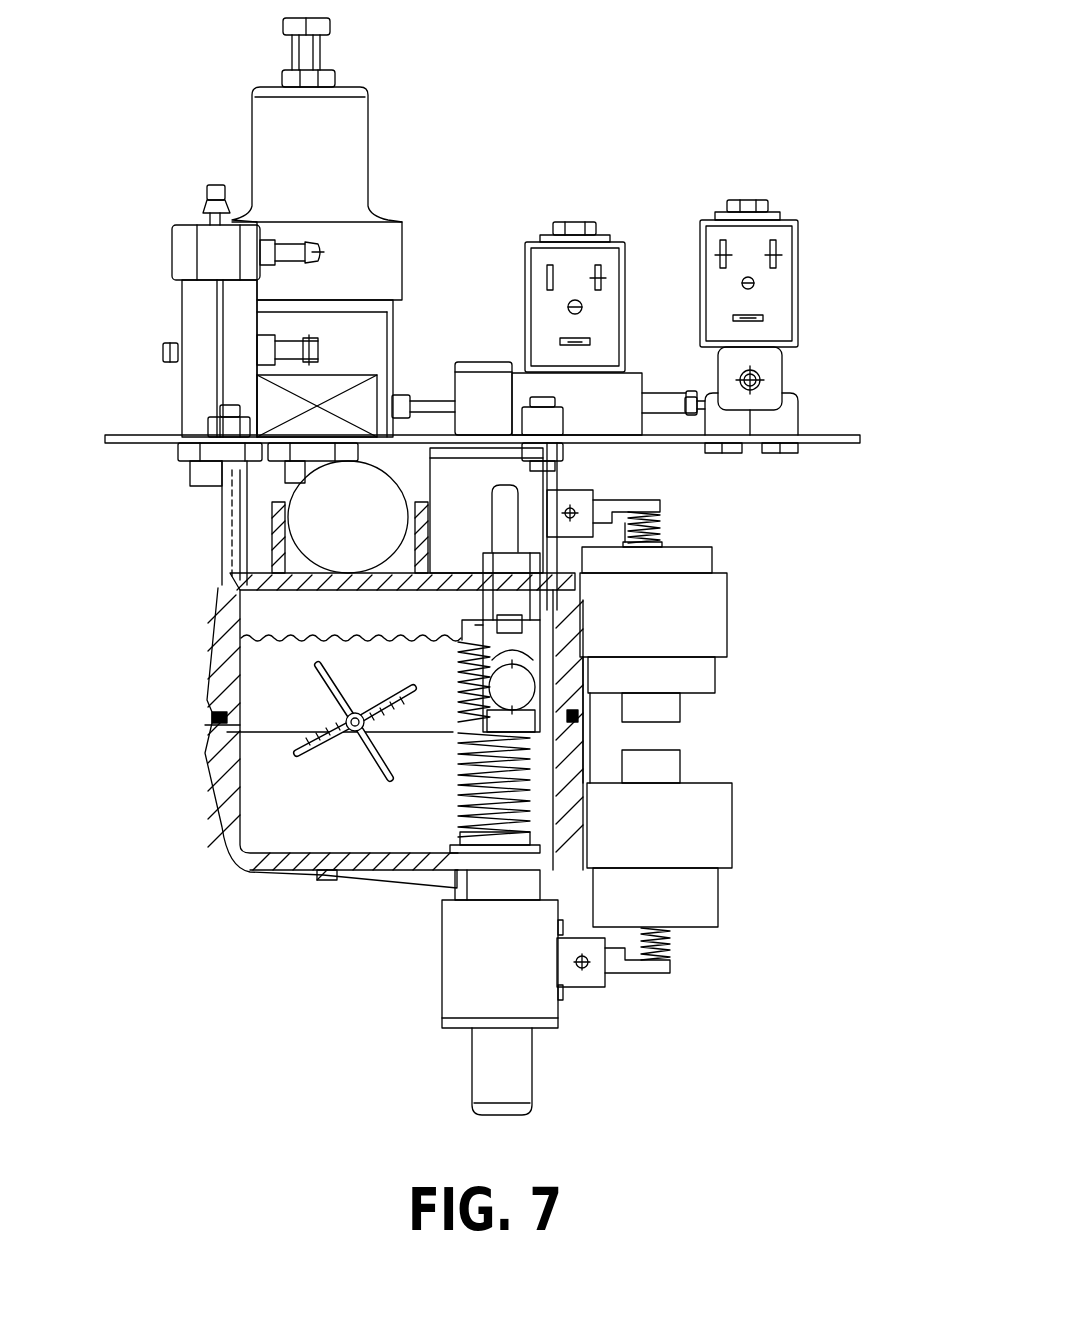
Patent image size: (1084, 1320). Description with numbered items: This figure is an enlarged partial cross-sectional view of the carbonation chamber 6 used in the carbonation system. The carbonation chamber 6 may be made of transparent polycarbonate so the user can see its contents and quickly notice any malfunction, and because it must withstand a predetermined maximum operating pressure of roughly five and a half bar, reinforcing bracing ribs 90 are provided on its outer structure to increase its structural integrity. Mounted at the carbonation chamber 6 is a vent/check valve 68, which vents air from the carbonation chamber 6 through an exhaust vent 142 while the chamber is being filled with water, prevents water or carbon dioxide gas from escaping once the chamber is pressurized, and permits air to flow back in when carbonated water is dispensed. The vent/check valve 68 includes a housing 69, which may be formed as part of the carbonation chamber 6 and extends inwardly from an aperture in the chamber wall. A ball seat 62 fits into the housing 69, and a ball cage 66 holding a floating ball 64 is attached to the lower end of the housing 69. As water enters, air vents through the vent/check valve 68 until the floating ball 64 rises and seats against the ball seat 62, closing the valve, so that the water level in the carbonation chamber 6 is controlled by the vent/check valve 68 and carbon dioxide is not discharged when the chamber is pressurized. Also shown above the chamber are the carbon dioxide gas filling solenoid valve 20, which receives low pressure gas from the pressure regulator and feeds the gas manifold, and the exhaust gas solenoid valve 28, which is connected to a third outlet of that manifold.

The carbonation chamber 6 is at (173, 612).
The carbon dioxide gas filling solenoid valve 20 is at (610, 267).
The exhaust gas solenoid valve 28 is at (777, 235).
The ball seat 62 is at (480, 664).
The floating ball 64 is at (515, 684).
The ball cage 66 is at (457, 733).
The vent/check valve 68 is at (505, 576).
The housing 69 is at (490, 601).
The bracing ribs 90 is at (218, 695).
The exhaust vent 142 is at (503, 500).